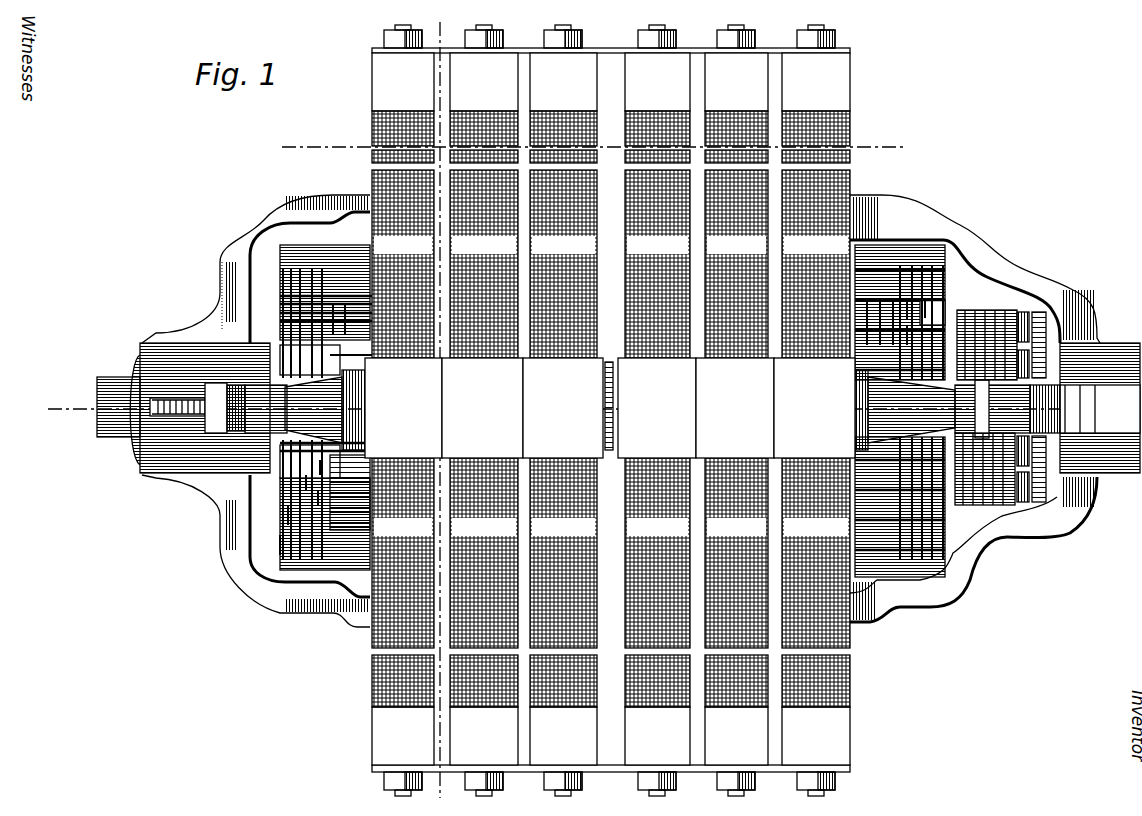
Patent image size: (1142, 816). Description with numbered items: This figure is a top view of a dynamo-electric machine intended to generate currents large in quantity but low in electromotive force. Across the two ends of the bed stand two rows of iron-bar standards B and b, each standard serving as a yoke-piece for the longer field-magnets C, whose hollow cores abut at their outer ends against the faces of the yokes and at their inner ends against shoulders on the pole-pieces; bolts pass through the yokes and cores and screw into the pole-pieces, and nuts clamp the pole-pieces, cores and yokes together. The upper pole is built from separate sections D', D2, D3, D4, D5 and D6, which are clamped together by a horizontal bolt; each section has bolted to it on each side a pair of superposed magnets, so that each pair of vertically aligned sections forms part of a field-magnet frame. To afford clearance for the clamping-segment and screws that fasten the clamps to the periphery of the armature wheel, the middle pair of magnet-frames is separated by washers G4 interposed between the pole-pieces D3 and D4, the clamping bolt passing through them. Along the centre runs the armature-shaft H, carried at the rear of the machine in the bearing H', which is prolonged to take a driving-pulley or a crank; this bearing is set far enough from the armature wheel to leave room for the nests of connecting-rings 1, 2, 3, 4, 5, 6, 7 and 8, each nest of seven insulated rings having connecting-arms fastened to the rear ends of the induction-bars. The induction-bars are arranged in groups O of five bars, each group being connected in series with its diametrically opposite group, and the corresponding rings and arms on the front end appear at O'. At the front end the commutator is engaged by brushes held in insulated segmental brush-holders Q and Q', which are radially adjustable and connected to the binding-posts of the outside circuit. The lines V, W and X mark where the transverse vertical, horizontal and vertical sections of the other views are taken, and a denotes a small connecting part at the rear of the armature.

The standard b is at (611, 82).
The standard B is at (611, 736).
The longer field-magnet C is at (611, 409).
The upper pole section D' is at (403, 408).
The upper pole section D2 is at (482, 408).
The upper pole section D3 is at (563, 408).
The upper pole section D4 is at (657, 408).
The upper pole section D5 is at (735, 408).
The upper pole section D6 is at (814, 408).
The washer G4 is at (600, 426).
The armature-shaft H is at (1085, 408).
The bearing H' is at (192, 408).
The segmental brush-holder Q is at (1000, 469).
The segmental brush-holder Q' is at (1001, 345).
The group of induction-bars O is at (316, 410).
The armature winding conductors right O' is at (906, 411).
The section line v v V is at (439, 410).
The section line x x X is at (593, 147).
The section line w w W is at (581, 409).
The nest of connecting-rings 1 is at (605, 322).
The nest of connecting-rings 2 is at (605, 322).
The nest of connecting-rings 3 is at (605, 402).
The nest of connecting-rings 4 is at (612, 387).
The nest of connecting-rings 5 is at (606, 407).
The nest of connecting-rings 6 is at (614, 402).
The nest of connecting-rings 7 is at (284, 515).
The nest of connecting-rings 8 is at (275, 545).
The connecting strip a is at (351, 357).